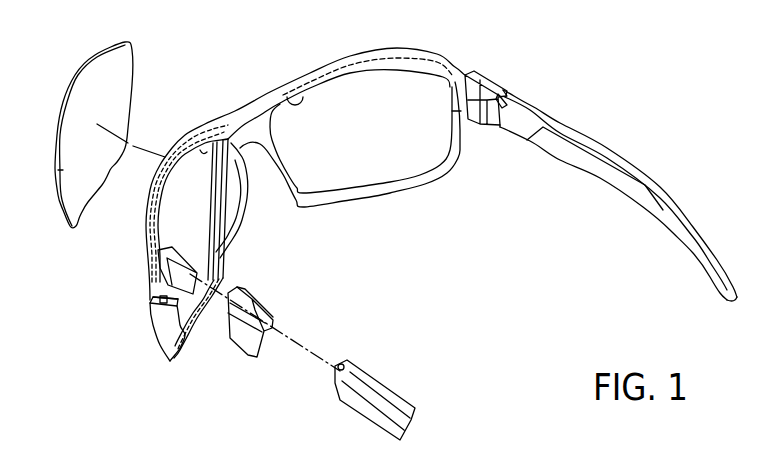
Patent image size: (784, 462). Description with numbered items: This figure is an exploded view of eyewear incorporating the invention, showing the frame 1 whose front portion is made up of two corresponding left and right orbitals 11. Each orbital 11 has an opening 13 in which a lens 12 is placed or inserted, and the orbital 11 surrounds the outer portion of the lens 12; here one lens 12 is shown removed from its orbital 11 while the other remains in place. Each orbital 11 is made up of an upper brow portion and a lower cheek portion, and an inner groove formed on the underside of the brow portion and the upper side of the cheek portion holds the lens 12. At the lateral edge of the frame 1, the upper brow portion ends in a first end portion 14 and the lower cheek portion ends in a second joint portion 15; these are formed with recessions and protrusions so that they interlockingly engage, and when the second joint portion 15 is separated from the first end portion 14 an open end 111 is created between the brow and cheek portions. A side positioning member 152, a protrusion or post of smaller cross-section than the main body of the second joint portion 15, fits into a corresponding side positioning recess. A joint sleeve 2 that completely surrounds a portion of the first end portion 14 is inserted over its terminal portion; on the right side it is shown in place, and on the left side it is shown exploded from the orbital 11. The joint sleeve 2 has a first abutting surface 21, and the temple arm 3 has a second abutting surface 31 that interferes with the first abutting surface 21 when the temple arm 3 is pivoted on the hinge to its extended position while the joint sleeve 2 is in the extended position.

The frame 1 is at (336, 50).
The orbital 11 is at (376, 53).
The lens 12 is at (128, 67).
The opening 13 is at (288, 103).
The first end portion 14 is at (187, 257).
The second joint portion 15 is at (152, 304).
The open end 111 is at (157, 289).
The side positioning member 152 is at (157, 293).
The joint sleeve 2 is at (488, 73).
The first abutting surface 21 is at (507, 82).
The temple arm 3 is at (607, 153).
The second abutting surface 31 is at (522, 98).